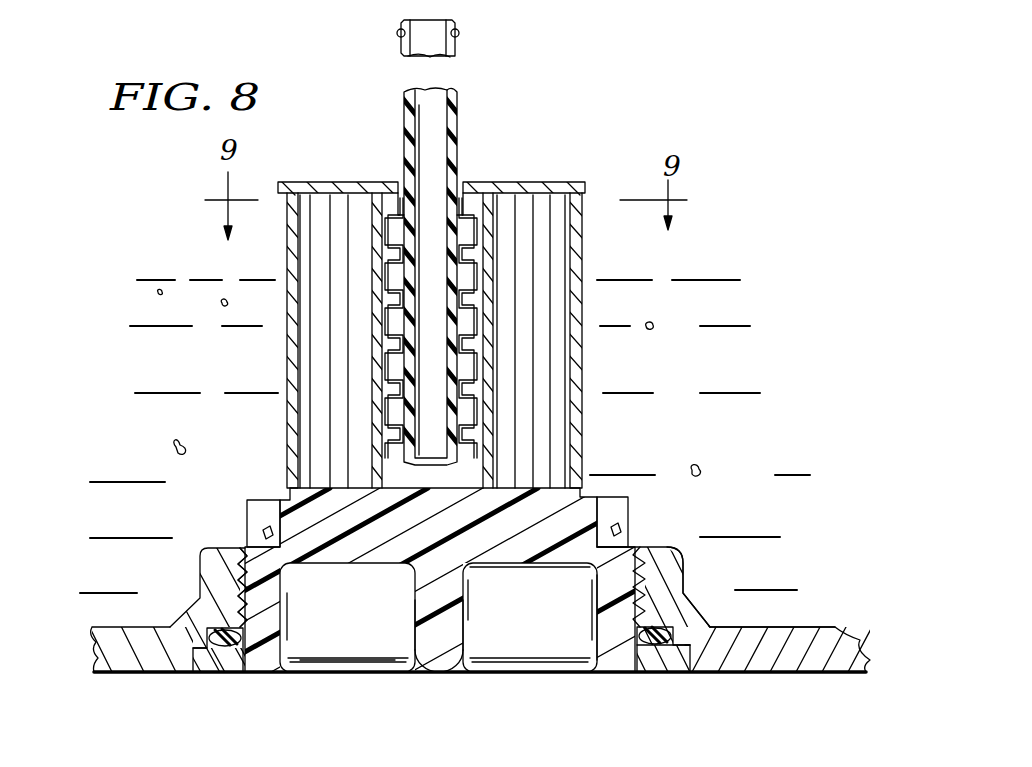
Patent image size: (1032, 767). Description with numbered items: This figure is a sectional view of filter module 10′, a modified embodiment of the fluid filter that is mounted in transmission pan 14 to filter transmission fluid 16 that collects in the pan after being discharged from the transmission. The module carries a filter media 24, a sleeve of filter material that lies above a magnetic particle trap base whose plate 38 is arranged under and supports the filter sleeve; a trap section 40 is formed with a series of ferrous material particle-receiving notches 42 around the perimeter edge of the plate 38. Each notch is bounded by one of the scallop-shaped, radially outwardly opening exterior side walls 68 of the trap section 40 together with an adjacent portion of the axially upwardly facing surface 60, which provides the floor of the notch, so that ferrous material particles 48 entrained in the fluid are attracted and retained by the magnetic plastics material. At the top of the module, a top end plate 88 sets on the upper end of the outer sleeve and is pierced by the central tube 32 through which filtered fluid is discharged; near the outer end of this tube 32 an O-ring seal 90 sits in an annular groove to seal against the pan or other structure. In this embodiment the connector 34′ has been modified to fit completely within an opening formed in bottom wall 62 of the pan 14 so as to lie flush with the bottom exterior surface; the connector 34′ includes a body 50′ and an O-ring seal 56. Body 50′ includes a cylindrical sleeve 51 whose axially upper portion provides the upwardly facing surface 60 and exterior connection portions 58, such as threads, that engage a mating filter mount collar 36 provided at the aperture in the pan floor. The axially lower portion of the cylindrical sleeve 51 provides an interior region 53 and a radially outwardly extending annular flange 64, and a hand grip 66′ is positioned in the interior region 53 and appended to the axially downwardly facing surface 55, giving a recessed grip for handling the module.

The filter module 10′ is at (648, 157).
The transmission pan 14 is at (838, 676).
The transmission fluid 16 is at (165, 300).
The filter media 24 is at (583, 270).
The tube 32 is at (467, 141).
The connector 34′ is at (271, 692).
The filter mount collar 36 is at (700, 560).
The plate 38 is at (527, 490).
The trap section 40 is at (650, 537).
The ferrous material particle-receiving notches 42 is at (603, 513).
The ferrous material particles 48 is at (242, 500).
The body 50′ is at (311, 573).
The cylindrical sleeve 51 is at (607, 628).
The interior region 53 is at (384, 638).
The axially downwardly facing surface 55 is at (515, 565).
The O-ring seal 56 is at (222, 647).
The exterior connection portions 58 is at (645, 598).
The axially upwardly facing surface 60 is at (255, 547).
The bottom wall 62 is at (803, 658).
The annular flange 64 is at (667, 658).
The hand grip 66′ is at (470, 641).
The exterior side walls 68 is at (278, 505).
The top end plate 88 is at (330, 186).
The O-ring seal 90 is at (460, 33).